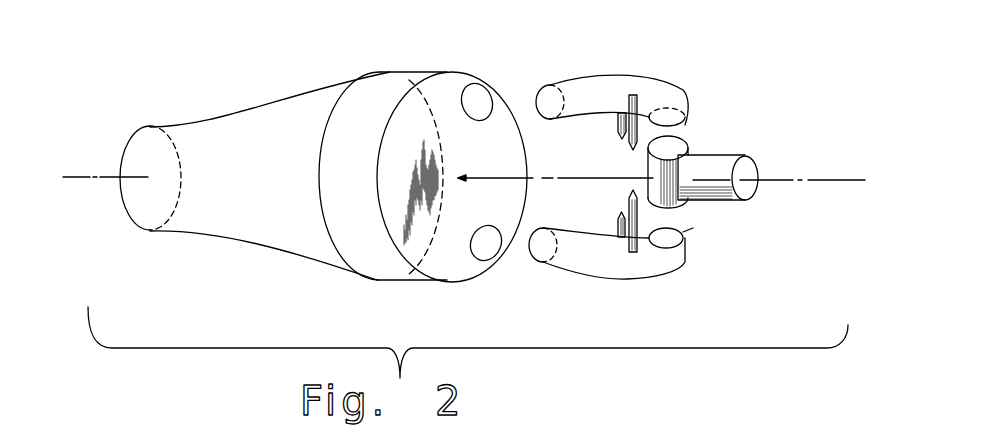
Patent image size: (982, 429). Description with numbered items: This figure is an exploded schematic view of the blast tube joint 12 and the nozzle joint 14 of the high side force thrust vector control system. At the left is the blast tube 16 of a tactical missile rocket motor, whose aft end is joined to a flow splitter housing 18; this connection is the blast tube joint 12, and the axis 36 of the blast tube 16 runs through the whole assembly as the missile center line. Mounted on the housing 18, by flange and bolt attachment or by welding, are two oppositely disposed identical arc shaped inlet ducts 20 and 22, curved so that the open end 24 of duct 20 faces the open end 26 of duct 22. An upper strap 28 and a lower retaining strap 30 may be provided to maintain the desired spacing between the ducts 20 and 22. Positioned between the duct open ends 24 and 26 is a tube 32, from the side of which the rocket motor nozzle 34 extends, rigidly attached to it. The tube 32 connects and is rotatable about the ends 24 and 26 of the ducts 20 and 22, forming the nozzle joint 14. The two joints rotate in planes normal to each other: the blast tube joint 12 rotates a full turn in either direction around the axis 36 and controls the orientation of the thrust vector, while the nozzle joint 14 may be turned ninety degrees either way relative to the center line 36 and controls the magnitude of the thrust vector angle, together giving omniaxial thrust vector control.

The blast tube joint 12 is at (410, 280).
The nozzle joint 14 is at (722, 130).
The blast tube 16 is at (253, 108).
The flow splitter housing 18 is at (438, 283).
The arc shaped inlet duct 20 is at (602, 72).
The arc shaped inlet duct 22 is at (609, 279).
The open end 24 is at (690, 132).
The open end 26 is at (693, 228).
The upper strap 28 is at (630, 142).
The lower retaining strap 30 is at (617, 127).
The tube 32 is at (652, 168).
The rocket motor nozzle 34 is at (722, 202).
The axis 36 is at (572, 178).